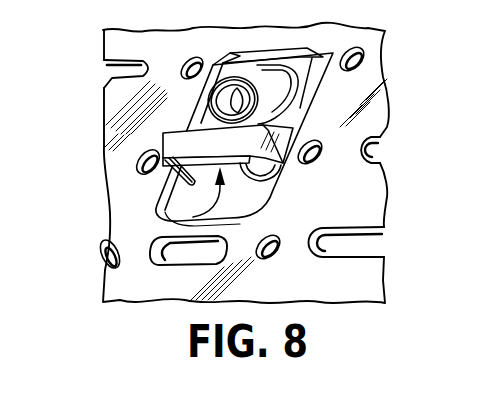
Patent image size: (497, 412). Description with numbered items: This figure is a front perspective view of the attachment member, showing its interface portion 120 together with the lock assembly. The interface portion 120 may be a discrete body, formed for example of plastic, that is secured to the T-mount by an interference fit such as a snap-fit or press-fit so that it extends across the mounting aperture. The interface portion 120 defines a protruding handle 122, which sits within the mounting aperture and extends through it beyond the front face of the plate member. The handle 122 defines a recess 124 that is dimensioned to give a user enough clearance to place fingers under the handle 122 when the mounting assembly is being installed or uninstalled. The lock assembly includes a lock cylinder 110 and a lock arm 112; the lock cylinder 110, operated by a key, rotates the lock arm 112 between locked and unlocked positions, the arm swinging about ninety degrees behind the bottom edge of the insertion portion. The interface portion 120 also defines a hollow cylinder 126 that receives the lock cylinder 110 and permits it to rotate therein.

The lock cylinder 110 is at (225, 100).
The lock arm 112 is at (275, 197).
The interface portion 120 is at (300, 93).
The handle 122 is at (163, 156).
The recess 124 is at (160, 219).
The hollow cylinder 126 is at (240, 82).